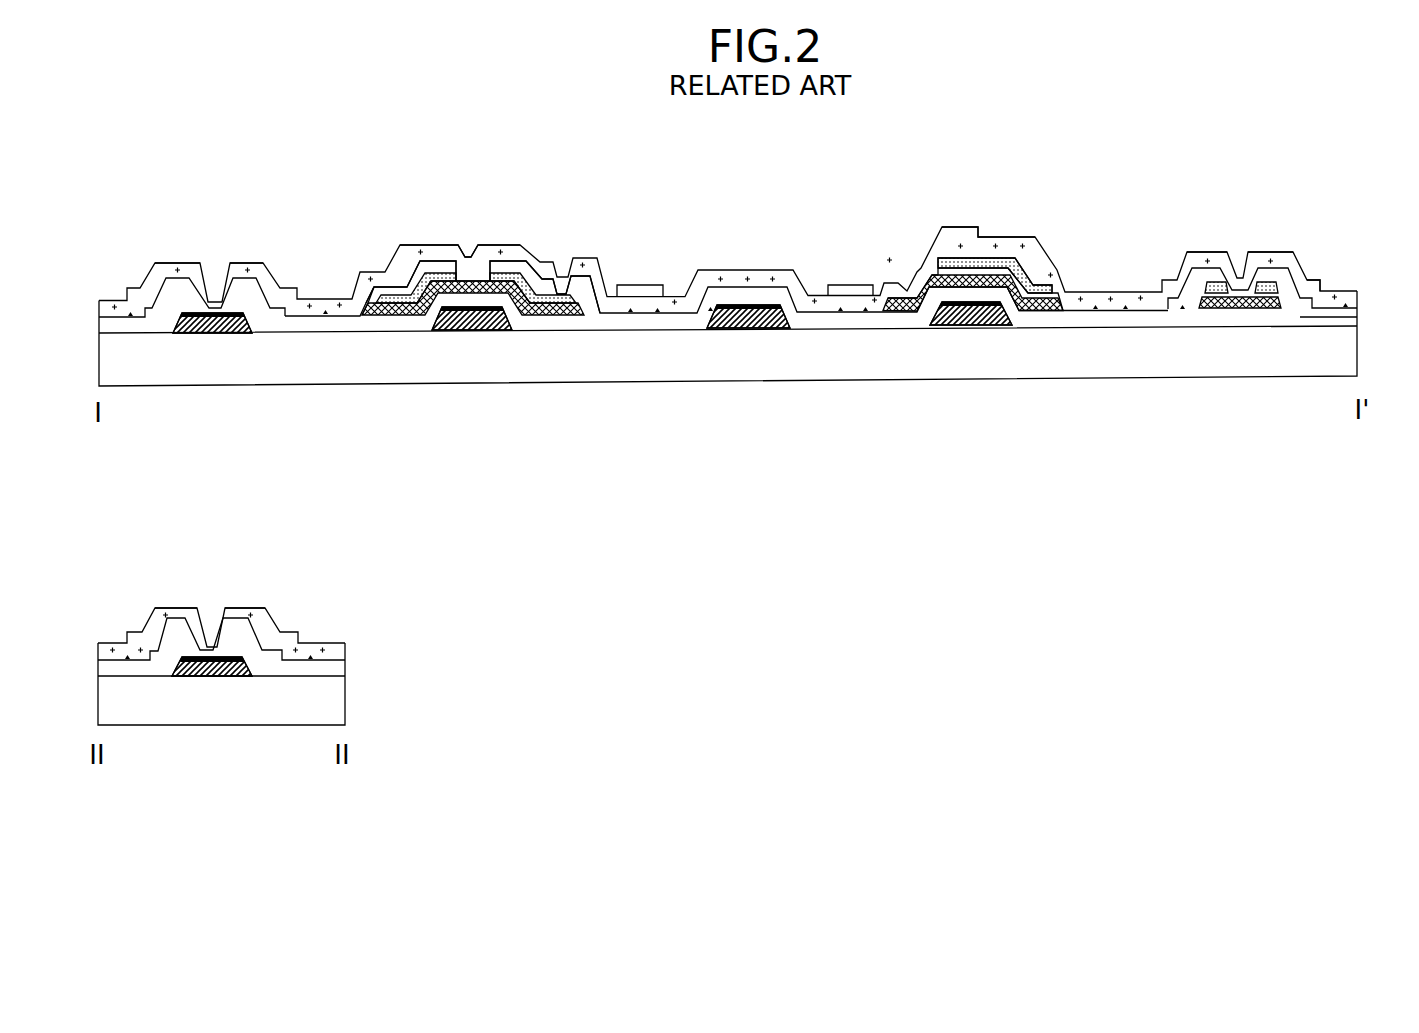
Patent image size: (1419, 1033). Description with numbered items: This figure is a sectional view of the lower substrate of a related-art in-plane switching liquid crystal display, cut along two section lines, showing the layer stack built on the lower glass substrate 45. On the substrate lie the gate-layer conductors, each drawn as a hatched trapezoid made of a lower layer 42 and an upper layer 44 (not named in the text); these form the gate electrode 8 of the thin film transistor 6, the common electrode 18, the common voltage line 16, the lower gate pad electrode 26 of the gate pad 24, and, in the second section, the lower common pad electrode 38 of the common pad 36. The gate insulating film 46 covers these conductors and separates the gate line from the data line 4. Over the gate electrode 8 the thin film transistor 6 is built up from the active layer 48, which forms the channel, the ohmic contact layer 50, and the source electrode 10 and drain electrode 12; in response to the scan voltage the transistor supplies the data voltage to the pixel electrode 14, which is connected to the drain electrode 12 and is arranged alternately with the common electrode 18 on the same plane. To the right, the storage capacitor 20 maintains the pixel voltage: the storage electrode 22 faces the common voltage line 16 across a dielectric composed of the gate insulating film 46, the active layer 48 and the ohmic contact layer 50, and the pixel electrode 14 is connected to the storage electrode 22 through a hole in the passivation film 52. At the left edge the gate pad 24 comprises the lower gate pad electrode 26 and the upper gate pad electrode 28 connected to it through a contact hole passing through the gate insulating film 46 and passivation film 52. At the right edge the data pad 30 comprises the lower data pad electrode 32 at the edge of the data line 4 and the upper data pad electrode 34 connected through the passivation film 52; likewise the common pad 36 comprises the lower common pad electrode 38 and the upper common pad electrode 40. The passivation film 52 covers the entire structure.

The data line 4 is at (378, 290).
The thin film transistor 6 is at (407, 225).
The gate electrode 8 is at (490, 437).
The source electrode 10 is at (432, 264).
The drain electrode 12 is at (538, 245).
The pixel electrode 14 is at (632, 287).
The common voltage line 16 is at (992, 435).
The common electrode 18 is at (763, 438).
The storage capacitor 20 is at (1031, 229).
The storage electrode 22 is at (995, 262).
The gate pad 24 is at (256, 255).
The lower gate pad electrode 26 is at (230, 443).
The upper gate pad electrode 28 is at (173, 263).
The data pad 30 is at (1316, 248).
The lower data pad electrode 32 is at (1267, 265).
The upper data pad electrode 34 is at (1203, 256).
The common pad 36 is at (257, 598).
The lower common pad electrode 38 is at (230, 787).
The upper common pad electrode 40 is at (173, 608).
The lower gate conductive layer 42 is at (215, 334).
The upper gate conductive layer 44 is at (243, 334).
The lower glass substrate 45 is at (1358, 355).
The gate insulating film 46 is at (1358, 317).
The active layer 48 is at (575, 316).
The ohmic contact layer 50 is at (492, 268).
The passivation film 52 is at (1358, 296).